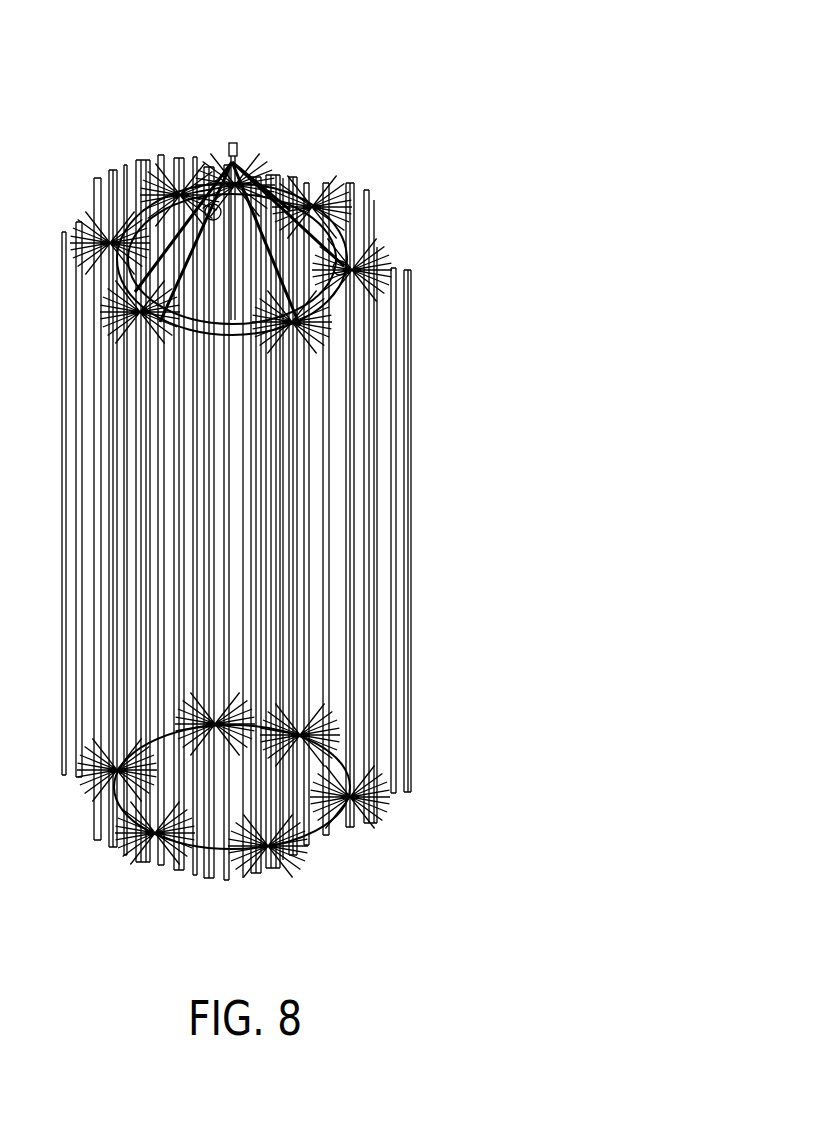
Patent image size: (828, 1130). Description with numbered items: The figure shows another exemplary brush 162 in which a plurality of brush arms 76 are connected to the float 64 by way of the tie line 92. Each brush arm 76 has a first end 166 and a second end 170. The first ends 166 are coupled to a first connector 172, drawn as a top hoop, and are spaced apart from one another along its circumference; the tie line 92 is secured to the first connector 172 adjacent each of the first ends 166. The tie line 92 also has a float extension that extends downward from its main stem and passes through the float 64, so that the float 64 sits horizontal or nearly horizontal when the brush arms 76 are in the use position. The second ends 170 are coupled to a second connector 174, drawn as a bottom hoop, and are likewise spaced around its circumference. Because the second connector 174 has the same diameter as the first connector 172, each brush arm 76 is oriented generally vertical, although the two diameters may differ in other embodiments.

The brush 162 is at (402, 104).
The tie line 92 is at (235, 145).
The float 64 is at (285, 212).
The first connector 172 is at (362, 220).
The first end 166 is at (395, 278).
The brush arms 76 is at (398, 444).
The second connector 174 is at (94, 822).
The second end 170 is at (172, 840).